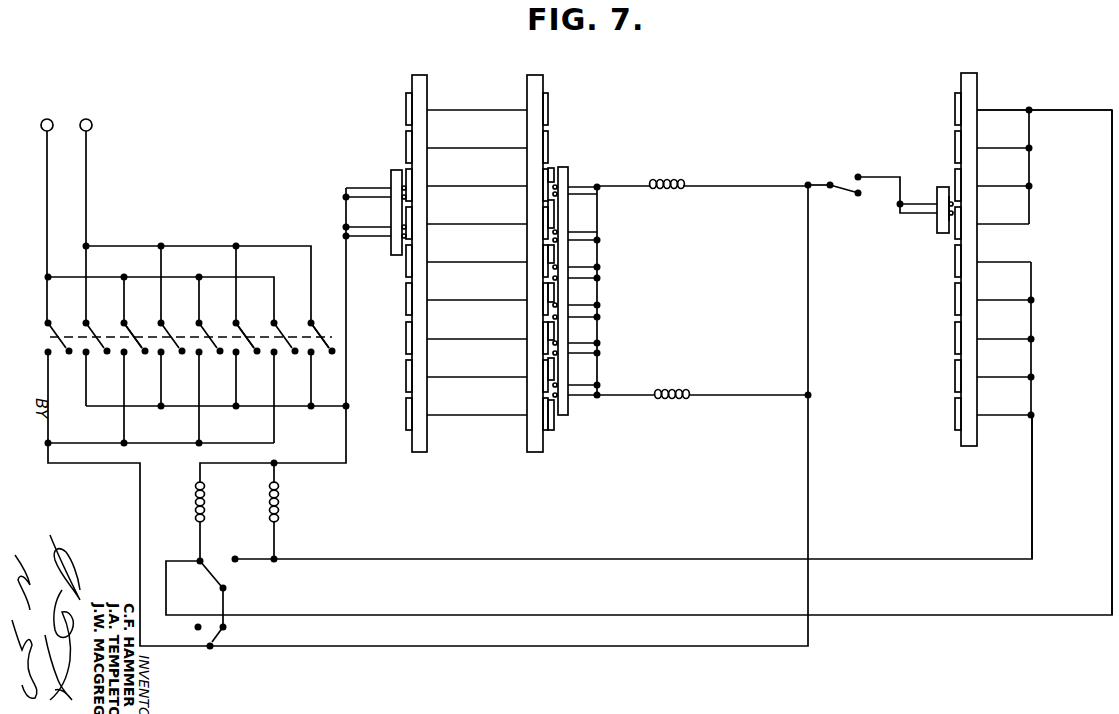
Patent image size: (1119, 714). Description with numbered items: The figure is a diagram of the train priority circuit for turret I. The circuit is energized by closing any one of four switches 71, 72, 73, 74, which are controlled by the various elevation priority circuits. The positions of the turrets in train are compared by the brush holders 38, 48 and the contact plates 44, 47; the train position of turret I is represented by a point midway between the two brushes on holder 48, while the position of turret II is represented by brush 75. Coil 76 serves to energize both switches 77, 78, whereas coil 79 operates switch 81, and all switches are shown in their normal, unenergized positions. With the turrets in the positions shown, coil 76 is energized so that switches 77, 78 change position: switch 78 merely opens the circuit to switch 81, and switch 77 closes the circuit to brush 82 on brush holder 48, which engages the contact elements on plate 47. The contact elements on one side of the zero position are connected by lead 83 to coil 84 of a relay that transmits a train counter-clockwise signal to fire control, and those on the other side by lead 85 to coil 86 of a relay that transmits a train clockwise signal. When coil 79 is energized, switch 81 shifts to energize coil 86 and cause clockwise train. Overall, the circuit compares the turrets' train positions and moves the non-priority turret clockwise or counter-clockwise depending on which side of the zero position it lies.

The brush holder 38 is at (568, 179).
The contact plate 44 is at (539, 76).
The contact plate 47 is at (427, 78).
The brush holder 48 is at (393, 170).
The switch 71 is at (66, 340).
The switch 72 is at (136, 356).
The switch 73 is at (247, 355).
The switch 74 is at (322, 356).
The brush 75 is at (555, 182).
The coil 76 is at (686, 185).
The switch 77 is at (857, 177).
The switch 78 is at (216, 640).
The coil 79 is at (691, 395).
The switch 81 is at (216, 577).
The brush 82 is at (951, 200).
The lead 83 is at (1112, 405).
The coil 84 is at (195, 510).
The lead 85 is at (1032, 473).
The coil 86 is at (279, 516).